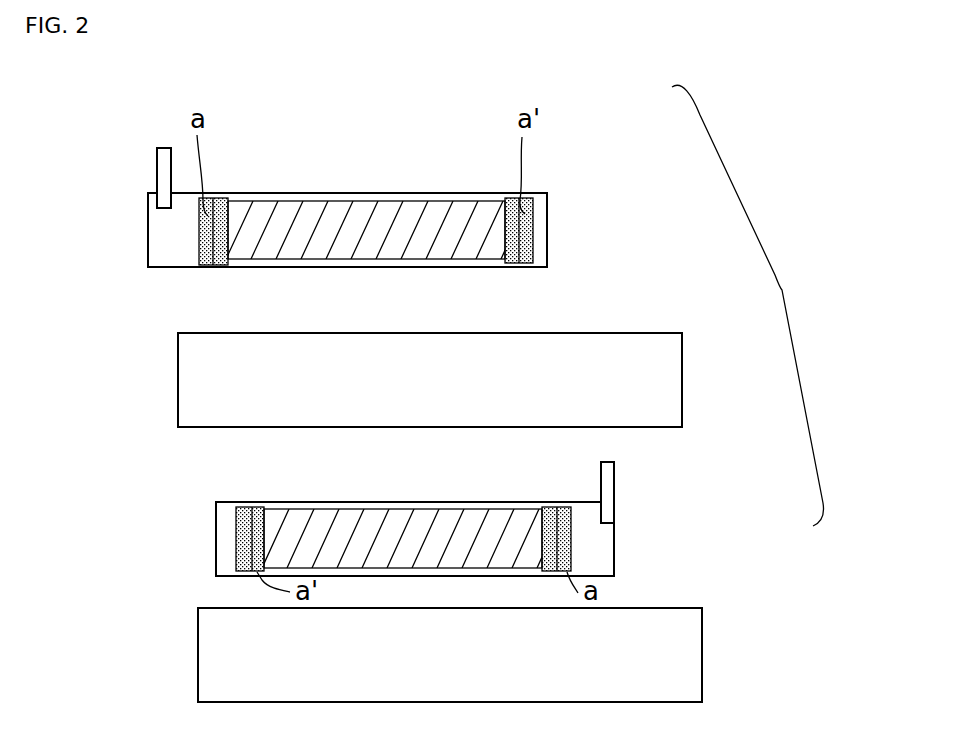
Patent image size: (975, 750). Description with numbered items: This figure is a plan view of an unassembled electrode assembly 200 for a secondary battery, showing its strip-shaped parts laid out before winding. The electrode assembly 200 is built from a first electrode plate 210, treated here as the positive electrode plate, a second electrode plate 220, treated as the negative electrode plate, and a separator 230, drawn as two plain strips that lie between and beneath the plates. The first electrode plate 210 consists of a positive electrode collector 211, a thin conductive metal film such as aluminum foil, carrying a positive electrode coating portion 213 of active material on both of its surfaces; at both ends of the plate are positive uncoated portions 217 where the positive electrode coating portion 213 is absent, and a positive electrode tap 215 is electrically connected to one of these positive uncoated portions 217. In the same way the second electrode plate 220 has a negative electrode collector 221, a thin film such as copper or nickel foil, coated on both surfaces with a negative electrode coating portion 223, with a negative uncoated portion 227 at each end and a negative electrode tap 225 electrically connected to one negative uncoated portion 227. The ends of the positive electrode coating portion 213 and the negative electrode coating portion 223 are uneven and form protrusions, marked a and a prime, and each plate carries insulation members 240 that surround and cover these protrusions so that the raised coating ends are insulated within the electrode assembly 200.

The electrode assembly 200 is at (750, 305).
The first electrode plate 210 is at (363, 171).
The positive electrode collector 211 is at (548, 236).
The positive electrode coating portion 213 is at (310, 200).
The positive electrode tap 215 is at (158, 162).
The positive uncoated portion 217 is at (157, 240).
The second electrode plate 220 is at (445, 507).
The negative electrode collector 221 is at (217, 555).
The negative electrode coating portion 223 is at (302, 517).
The negative electrode tap 225 is at (601, 472).
The negative uncoated portion 227 is at (225, 517).
The separator 230 is at (639, 322).
The insulation member 240 is at (200, 253).